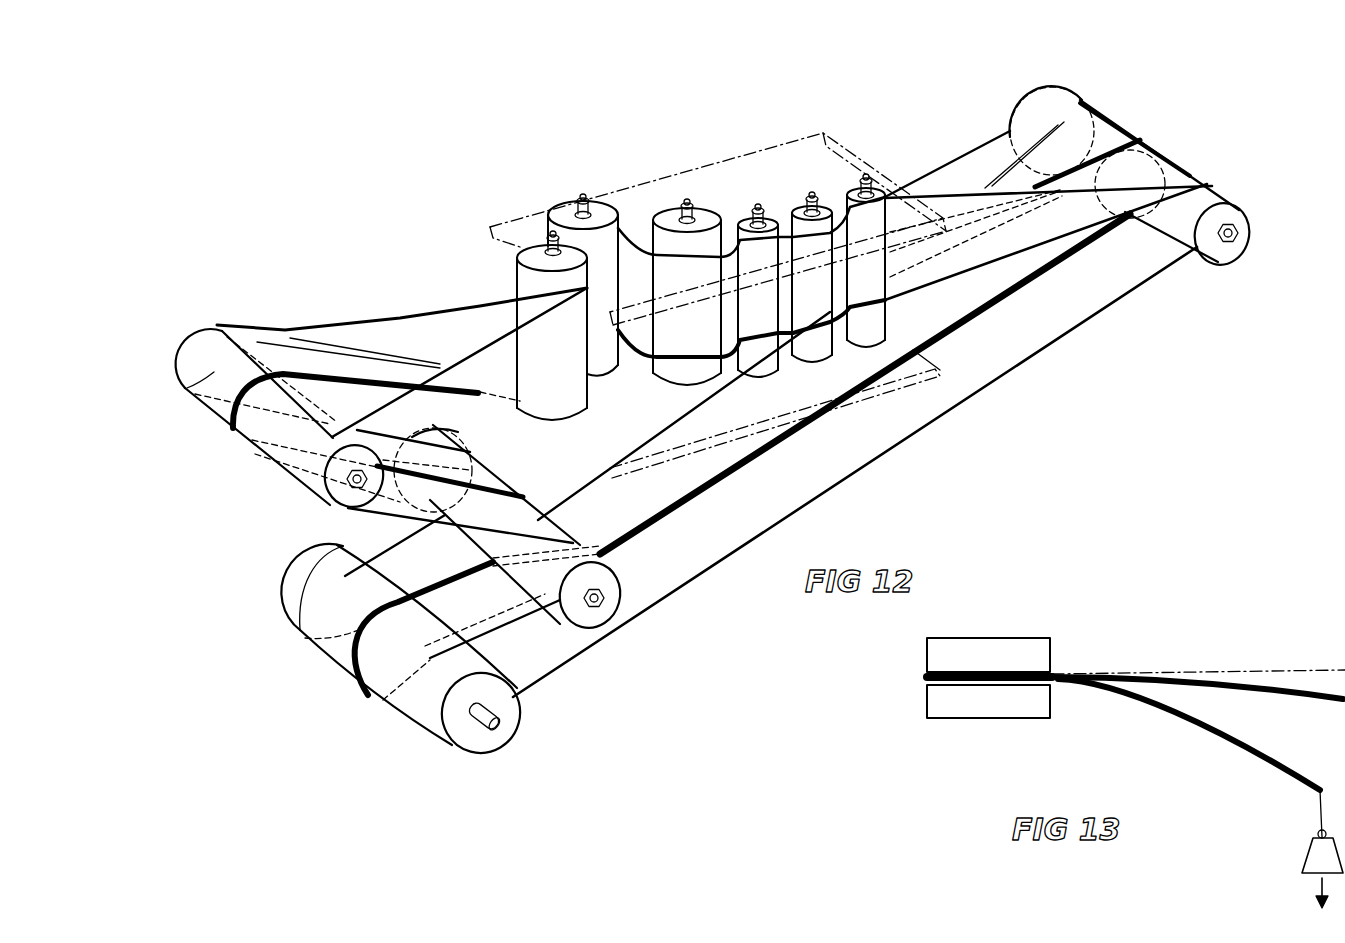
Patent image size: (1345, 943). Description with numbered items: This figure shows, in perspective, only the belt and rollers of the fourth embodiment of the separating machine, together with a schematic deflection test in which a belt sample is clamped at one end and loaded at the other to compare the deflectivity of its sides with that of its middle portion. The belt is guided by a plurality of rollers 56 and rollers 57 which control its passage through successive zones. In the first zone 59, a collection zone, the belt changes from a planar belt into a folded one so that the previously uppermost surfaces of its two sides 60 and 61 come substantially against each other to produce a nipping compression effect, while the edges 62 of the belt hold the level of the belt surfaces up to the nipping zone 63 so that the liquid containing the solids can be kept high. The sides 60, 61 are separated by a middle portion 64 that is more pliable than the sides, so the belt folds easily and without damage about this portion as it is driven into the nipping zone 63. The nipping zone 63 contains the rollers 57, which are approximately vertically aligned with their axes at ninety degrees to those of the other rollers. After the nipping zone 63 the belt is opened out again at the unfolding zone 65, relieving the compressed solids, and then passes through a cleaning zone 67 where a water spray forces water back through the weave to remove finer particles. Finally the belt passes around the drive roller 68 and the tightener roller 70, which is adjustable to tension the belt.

The rollers 56 is at (327, 490).
The rollers 57 is at (540, 250).
The first zone 59 is at (440, 295).
The side 60 is at (213, 373).
The side 61 is at (280, 457).
The edges 62 is at (380, 402).
The nipping zone 63 is at (573, 407).
The middle portion 64 is at (235, 425).
The unfolding zone 65 is at (960, 173).
The cleaning zone 67 is at (847, 457).
The drive roller 68 is at (503, 712).
The tightener roller 70 is at (610, 597).